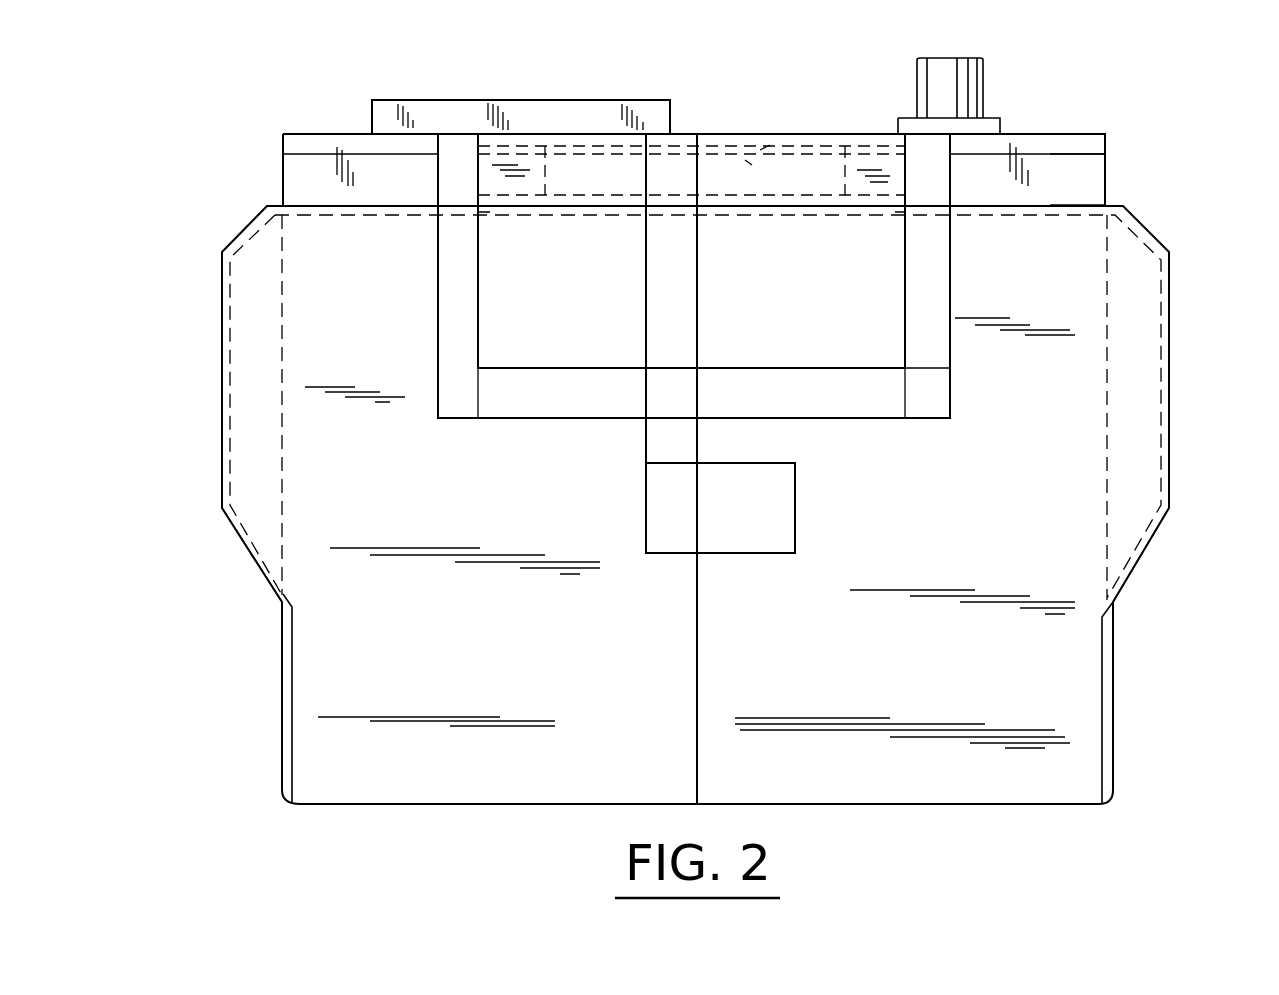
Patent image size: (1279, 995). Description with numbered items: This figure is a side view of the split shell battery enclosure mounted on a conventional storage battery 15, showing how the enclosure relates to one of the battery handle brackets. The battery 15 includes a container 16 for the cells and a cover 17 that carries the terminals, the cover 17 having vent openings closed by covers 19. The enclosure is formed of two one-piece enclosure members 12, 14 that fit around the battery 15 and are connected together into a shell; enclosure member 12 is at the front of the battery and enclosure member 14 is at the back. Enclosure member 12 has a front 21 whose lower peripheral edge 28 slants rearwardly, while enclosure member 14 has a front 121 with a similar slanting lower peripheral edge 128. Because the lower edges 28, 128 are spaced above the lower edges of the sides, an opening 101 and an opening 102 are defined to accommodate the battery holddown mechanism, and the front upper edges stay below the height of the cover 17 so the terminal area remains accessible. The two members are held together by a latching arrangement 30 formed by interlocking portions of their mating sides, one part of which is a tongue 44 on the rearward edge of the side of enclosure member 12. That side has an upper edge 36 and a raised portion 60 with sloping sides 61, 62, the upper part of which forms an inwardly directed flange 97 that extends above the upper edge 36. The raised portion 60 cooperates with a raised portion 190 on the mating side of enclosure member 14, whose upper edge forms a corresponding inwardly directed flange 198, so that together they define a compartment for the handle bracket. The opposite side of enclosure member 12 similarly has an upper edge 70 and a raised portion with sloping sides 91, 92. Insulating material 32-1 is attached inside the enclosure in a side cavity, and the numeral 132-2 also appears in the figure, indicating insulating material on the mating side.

The enclosure member 12 is at (330, 660).
The enclosure member 14 is at (1040, 643).
The storage battery 15 is at (1048, 130).
The container 16 is at (1095, 182).
The cover 17 is at (985, 76).
The covers 19 is at (505, 102).
The front 21 is at (222, 402).
The lower peripheral edge 28 is at (280, 594).
The latching arrangement 30 is at (750, 568).
The insulating material 32-1 is at (515, 214).
The upper edge 36 is at (478, 203).
The tongue 44 is at (770, 495).
The raised portion 60 is at (508, 347).
The sloping side 61 is at (455, 310).
The sloping side 62 is at (548, 423).
The upper edge 70 is at (905, 203).
The sloping side 91 is at (927, 363).
The sloping side 92 is at (865, 398).
The inwardly directed flange 97 is at (672, 136).
The opening 101 is at (285, 770).
The opening 102 is at (1113, 732).
The front 121 is at (1170, 350).
The lower peripheral edge 128 is at (1115, 600).
The vent passage 132-2 is at (788, 214).
The raised portion 190 is at (885, 320).
The inwardly directed flange 198 is at (765, 143).